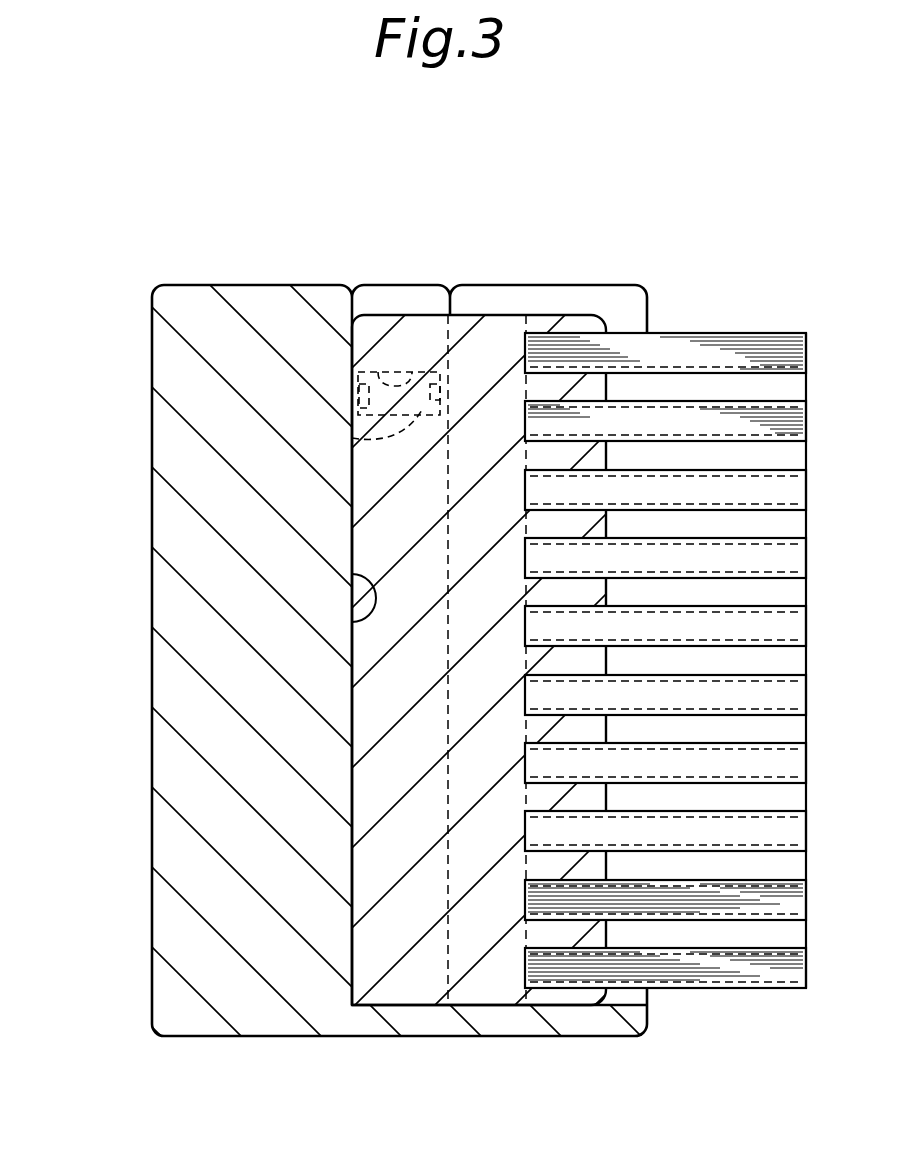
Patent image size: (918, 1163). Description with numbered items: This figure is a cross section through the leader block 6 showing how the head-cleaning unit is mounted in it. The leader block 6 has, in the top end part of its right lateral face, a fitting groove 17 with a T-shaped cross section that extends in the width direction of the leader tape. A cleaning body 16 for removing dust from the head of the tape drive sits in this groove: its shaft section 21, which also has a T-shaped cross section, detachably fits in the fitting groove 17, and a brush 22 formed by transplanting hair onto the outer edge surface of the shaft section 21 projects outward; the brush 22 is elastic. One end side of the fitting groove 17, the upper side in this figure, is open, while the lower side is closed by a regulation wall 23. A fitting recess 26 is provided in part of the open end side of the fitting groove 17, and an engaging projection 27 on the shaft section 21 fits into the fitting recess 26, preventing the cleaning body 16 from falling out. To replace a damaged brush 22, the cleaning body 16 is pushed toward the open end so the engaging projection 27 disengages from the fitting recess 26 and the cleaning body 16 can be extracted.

The leader block 6 is at (152, 672).
The cleaning body 16 is at (507, 316).
The fitting groove 17 is at (352, 620).
The shaft section 21 is at (410, 978).
The brush 22 is at (748, 968).
The regulation wall 23 is at (503, 1027).
The fitting recess 26 is at (418, 372).
The engaging projection 27 is at (352, 438).